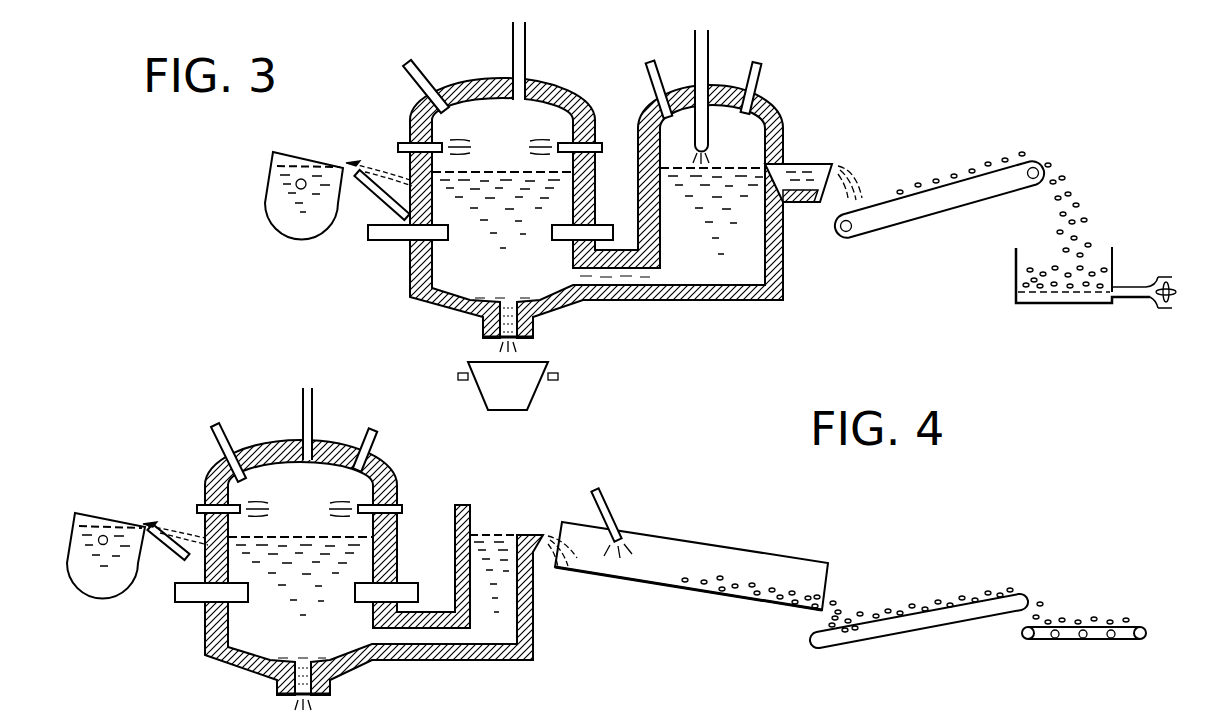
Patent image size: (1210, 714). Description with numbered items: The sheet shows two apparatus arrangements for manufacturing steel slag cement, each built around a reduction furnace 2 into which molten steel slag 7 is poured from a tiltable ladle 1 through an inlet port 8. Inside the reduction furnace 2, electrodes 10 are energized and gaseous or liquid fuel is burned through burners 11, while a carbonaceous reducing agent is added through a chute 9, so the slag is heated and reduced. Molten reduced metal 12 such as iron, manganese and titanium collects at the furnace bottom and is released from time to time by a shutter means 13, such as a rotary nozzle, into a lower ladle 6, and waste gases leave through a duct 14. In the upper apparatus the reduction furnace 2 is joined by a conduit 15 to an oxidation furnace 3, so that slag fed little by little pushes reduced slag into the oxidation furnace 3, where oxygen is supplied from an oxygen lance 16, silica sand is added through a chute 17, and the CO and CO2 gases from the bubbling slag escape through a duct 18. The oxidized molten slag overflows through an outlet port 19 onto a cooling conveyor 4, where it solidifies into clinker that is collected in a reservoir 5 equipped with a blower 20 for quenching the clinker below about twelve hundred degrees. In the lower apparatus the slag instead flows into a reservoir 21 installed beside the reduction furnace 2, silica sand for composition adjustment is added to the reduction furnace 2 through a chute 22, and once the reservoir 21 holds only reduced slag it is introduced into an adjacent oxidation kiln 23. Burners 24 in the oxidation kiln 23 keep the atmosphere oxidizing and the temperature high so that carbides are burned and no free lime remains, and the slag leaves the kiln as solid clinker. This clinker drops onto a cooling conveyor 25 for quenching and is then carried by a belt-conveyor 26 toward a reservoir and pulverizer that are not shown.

In FIG. 3, the ladle 1 is at (281, 236).
In FIG. 4, the ladle 1 is at (67, 570).
In FIG. 3, the reduction furnace 2 is at (410, 280).
In FIG. 4, the reduction furnace 2 is at (205, 636).
In FIG. 3, the oxidation furnace 3 is at (783, 252).
In FIG. 3, the cooling conveyor 4 is at (925, 210).
In FIG. 3, the reservoir 5 is at (1016, 272).
In FIG. 3, the ladle 6 is at (550, 390).
In FIG. 3, the molten steel slag 7 is at (268, 197).
In FIG. 4, the molten steel slag 7 is at (97, 527).
In FIG. 3, the inlet port 8 is at (377, 193).
In FIG. 4, the inlet port 8 is at (183, 535).
In FIG. 3, the chute 9 is at (417, 64).
In FIG. 4, the chute 9 is at (230, 438).
In FIG. 3, the electrodes 10 is at (368, 245).
In FIG. 4, the electrodes 10 is at (175, 595).
In FIG. 3, the burners 11 is at (404, 143).
In FIG. 4, the burners 11 is at (199, 505).
In FIG. 3, the molten reduced metal 12 is at (483, 318).
In FIG. 4, the molten reduced metal 12 is at (277, 682).
In FIG. 3, the shutter means 13 is at (533, 336).
In FIG. 4, the shutter means 13 is at (330, 694).
In FIG. 3, the duct 14 is at (525, 46).
In FIG. 4, the duct 14 is at (312, 392).
In FIG. 3, the conduit 15 is at (612, 285).
In FIG. 3, the oxygen lance 16 is at (708, 40).
In FIG. 3, the chute 17 is at (650, 68).
In FIG. 3, the duct 18 is at (760, 72).
In FIG. 3, the outlet port 19 is at (810, 165).
In FIG. 3, the blower 20 is at (1167, 308).
In FIG. 4, the reservoir 21 is at (470, 512).
In FIG. 4, the chute 22 is at (378, 440).
In FIG. 4, the oxidation kiln 23 is at (705, 543).
In FIG. 4, the burners 24 is at (620, 500).
In FIG. 4, the cooling conveyor 25 is at (887, 641).
In FIG. 4, the belt-conveyor 26 is at (1091, 645).